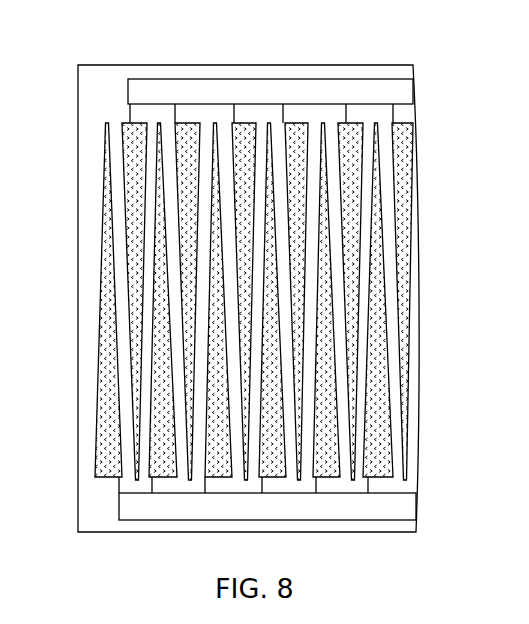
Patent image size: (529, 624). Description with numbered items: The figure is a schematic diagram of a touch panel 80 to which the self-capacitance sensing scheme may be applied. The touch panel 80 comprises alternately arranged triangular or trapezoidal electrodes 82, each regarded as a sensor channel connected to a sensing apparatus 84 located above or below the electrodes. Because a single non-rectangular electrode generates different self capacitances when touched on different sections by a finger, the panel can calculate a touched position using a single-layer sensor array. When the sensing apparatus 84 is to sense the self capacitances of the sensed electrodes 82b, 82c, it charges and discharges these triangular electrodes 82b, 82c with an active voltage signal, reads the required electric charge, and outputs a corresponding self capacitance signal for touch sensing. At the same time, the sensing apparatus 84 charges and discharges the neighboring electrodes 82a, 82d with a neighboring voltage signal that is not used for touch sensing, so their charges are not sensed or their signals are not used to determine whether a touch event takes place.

The touch panel 80 is at (103, 65).
The electrodes 82 is at (107, 177).
The neighboring electrode 82a is at (360, 297).
The sensed electrode 82b is at (330, 268).
The sensed electrode 82c is at (308, 238).
The neighboring electrode 82d is at (280, 205).
The sensing apparatus 84 is at (247, 79).